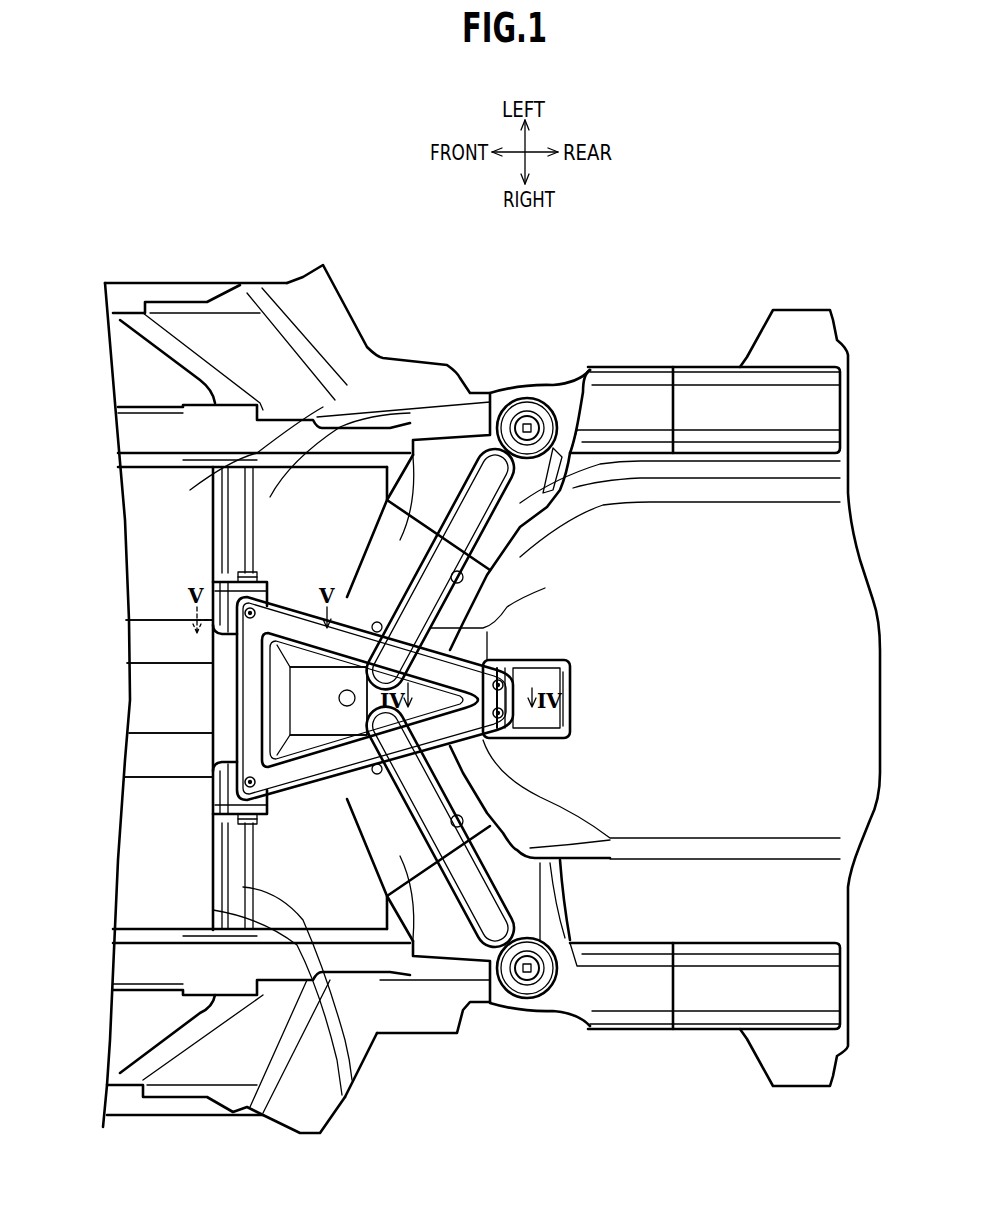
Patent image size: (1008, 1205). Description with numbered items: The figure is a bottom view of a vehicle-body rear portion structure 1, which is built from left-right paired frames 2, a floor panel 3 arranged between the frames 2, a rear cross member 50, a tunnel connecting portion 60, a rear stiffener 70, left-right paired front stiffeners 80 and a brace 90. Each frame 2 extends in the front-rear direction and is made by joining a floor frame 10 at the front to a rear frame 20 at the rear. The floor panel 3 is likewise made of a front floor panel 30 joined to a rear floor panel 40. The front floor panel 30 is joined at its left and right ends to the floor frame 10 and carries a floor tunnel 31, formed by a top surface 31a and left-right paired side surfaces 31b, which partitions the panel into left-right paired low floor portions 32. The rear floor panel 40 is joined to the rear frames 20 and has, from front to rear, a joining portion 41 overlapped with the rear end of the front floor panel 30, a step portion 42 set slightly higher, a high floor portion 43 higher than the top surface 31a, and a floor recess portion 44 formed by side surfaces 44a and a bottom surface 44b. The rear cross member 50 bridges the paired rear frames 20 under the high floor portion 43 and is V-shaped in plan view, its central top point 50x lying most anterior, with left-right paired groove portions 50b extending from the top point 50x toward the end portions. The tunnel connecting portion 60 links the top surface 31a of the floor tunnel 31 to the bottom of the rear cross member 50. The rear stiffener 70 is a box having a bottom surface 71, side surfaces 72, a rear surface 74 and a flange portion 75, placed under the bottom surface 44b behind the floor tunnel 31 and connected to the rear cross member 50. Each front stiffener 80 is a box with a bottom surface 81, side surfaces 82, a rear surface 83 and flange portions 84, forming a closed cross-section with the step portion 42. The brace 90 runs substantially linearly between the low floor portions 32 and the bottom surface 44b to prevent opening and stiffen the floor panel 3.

The vehicle-body rear portion structure 1 is at (627, 290).
The frame 2 is at (258, 192).
The floor panel 3 is at (420, 192).
The floor frame 10 is at (140, 433).
The rear frame 20 is at (273, 433).
The front floor panel 30 is at (317, 427).
The floor tunnel 31 is at (62, 630).
The top surface 31a is at (148, 695).
The side surfaces 31b is at (140, 636).
The low floor portions 32 is at (147, 548).
The rear floor panel 40 is at (347, 407).
The joining portion 41 is at (335, 1122).
The step portion 42 is at (350, 1077).
The high floor portion 43 is at (372, 1015).
The floor recess portion 44 is at (833, 261).
The side surfaces 44a is at (723, 490).
The bottom surface 44b is at (783, 550).
The rear cross member 50 is at (378, 542).
The groove portions 50b is at (463, 577).
The top point 50x is at (477, 627).
The tunnel connecting portion 60 is at (320, 703).
The rear stiffener 70 is at (587, 684).
The bottom surface 71 is at (550, 678).
The side surfaces 72 is at (542, 667).
The rear surface 74 is at (603, 700).
The flange portion 75 is at (523, 662).
The front stiffeners 80 is at (264, 572).
The bottom surface 81 is at (216, 585).
The side surfaces 82 is at (240, 575).
The rear surface 83 is at (270, 592).
The flange portions 84 is at (238, 572).
The brace 90 is at (237, 703).